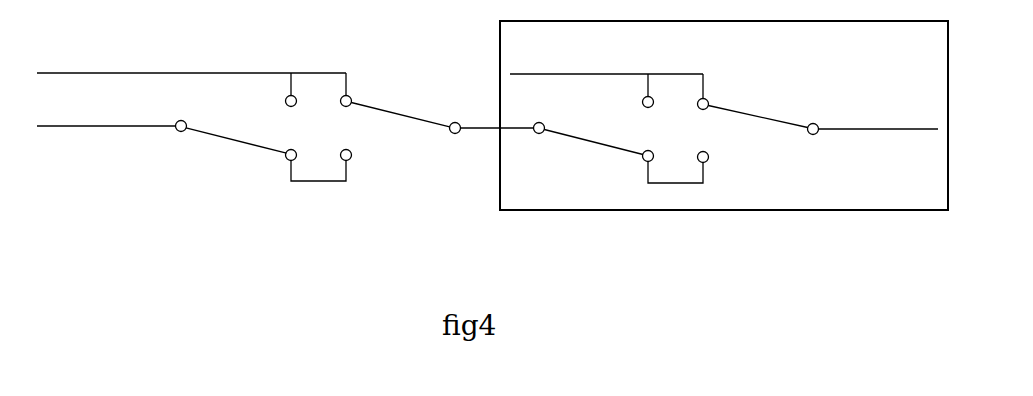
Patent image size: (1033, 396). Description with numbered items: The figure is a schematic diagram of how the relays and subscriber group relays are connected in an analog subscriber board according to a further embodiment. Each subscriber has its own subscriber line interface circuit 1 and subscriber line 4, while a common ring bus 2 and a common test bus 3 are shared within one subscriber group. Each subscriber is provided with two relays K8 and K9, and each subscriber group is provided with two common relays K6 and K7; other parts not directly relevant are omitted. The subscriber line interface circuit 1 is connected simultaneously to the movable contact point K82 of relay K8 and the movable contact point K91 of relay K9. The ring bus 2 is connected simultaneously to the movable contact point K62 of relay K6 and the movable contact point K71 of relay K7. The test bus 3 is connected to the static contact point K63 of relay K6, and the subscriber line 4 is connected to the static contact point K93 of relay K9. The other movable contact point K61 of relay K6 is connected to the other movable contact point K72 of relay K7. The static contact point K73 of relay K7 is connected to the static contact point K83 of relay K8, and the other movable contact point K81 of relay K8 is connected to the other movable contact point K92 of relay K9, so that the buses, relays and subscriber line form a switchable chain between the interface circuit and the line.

The subscriber line interface circuit 1 is at (724, 115).
The ring bus 2 is at (191, 56).
The test bus 3 is at (106, 109).
The subscriber line 4 is at (862, 112).
The relay K6 is at (236, 127).
The relay K7 is at (426, 127).
The relay K8 is at (591, 128).
The relay K9 is at (747, 128).
The movable contact point K61 is at (292, 158).
The movable contact point K62 is at (281, 90).
The static contact point K63 is at (221, 130).
The movable contact point K71 is at (395, 100).
The movable contact point K72 is at (347, 158).
The static contact point K73 is at (492, 122).
The movable contact point K81 is at (646, 160).
The movable contact point K82 is at (636, 91).
The static contact point K83 is at (575, 132).
The movable contact point K91 is at (753, 101).
The movable contact point K92 is at (703, 160).
The static contact point K93 is at (801, 135).